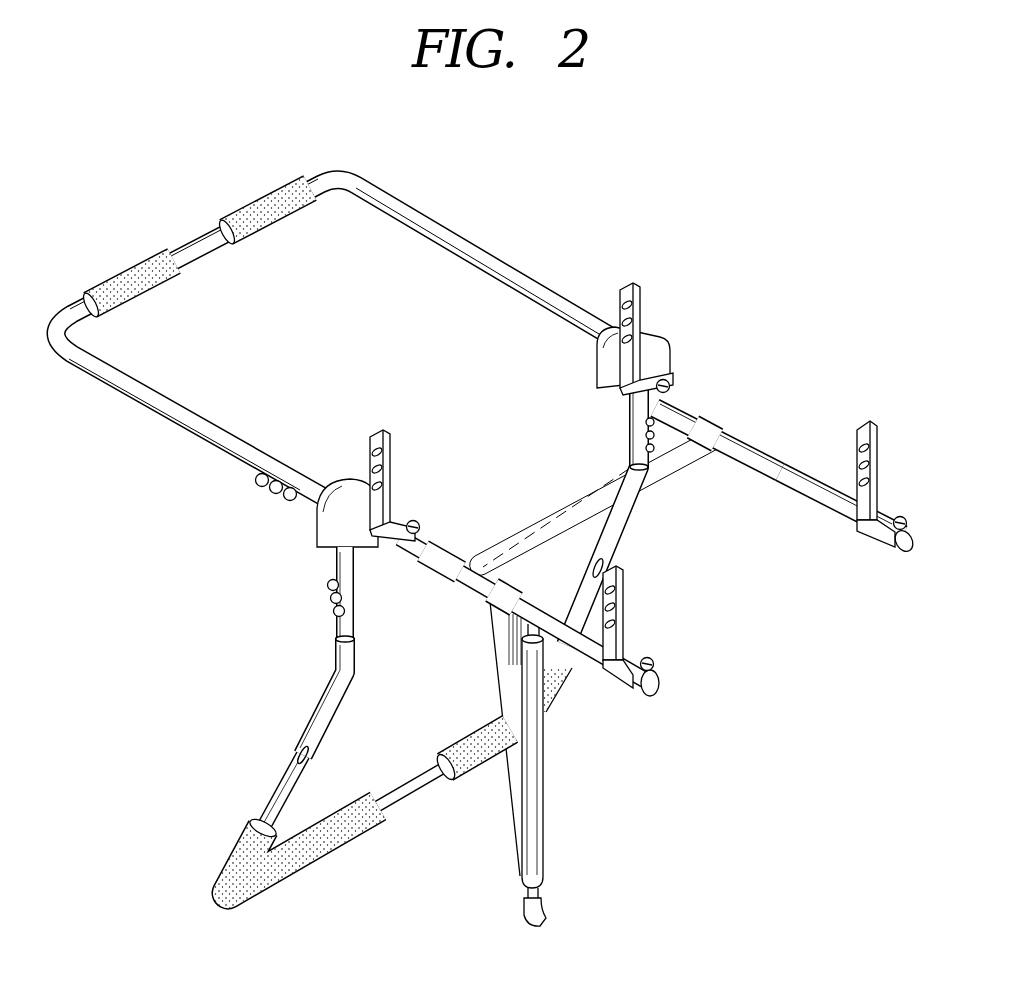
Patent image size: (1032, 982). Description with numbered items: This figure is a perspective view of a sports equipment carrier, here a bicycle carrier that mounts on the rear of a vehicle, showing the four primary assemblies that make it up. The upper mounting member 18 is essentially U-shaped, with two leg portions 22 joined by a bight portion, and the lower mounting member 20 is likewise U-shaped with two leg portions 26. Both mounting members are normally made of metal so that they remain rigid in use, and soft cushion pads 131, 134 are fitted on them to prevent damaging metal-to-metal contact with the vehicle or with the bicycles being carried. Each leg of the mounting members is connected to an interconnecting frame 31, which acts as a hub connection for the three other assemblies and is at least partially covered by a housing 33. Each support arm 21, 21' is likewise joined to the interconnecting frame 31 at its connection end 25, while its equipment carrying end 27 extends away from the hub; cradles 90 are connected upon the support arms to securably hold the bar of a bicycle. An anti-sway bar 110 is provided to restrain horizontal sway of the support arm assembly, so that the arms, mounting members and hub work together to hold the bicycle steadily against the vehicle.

The upper mounting member 18 is at (452, 266).
The leg portions 22 is at (407, 206).
The soft cushion pad 134 is at (133, 262).
The housing 33 is at (657, 333).
The cradles 90 is at (884, 504).
The connection end 25 is at (699, 380).
The interconnecting frame 31 is at (286, 557).
The support arm 21 is at (529, 617).
The support arm 21' is at (648, 488).
The equipment carrying end 27 is at (822, 528).
The anti-sway bar 110 is at (669, 502).
The soft cushion pad 131 is at (333, 641).
The leg portions 26 is at (584, 597).
The lower mounting member 20 is at (283, 733).